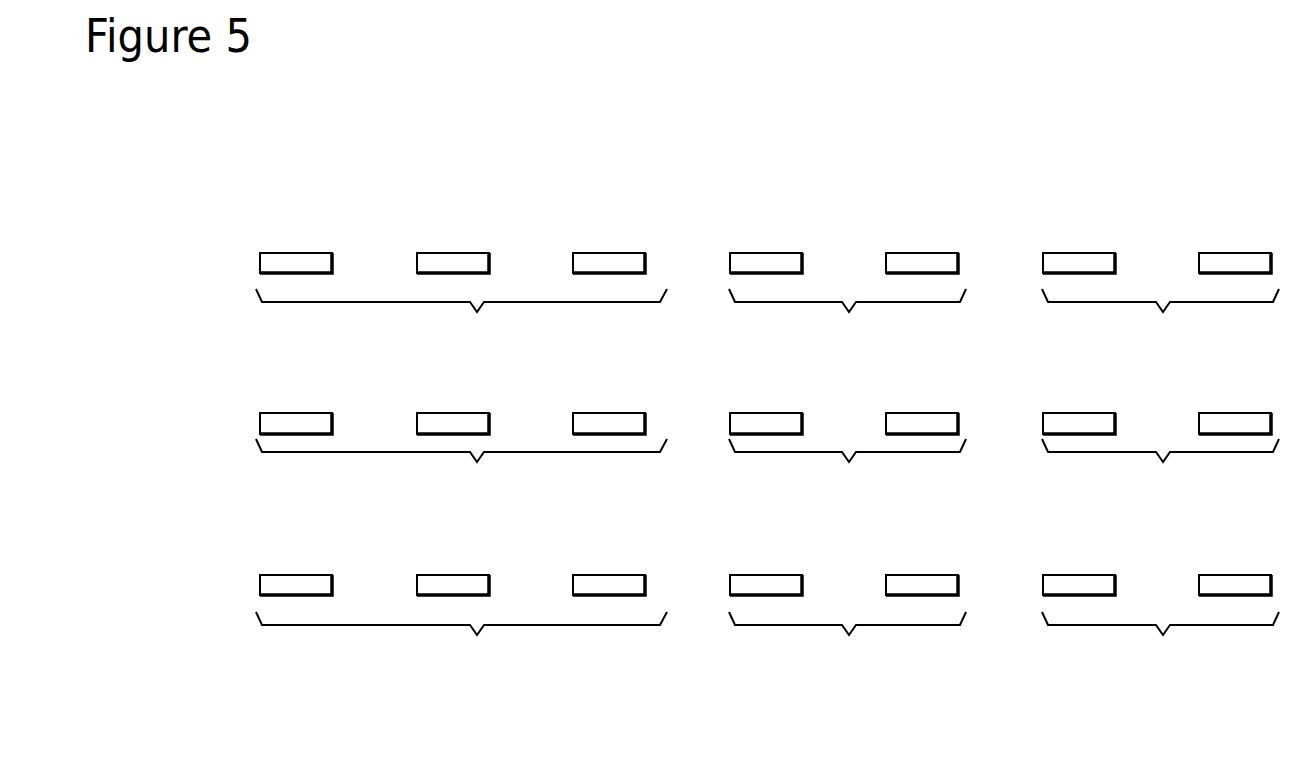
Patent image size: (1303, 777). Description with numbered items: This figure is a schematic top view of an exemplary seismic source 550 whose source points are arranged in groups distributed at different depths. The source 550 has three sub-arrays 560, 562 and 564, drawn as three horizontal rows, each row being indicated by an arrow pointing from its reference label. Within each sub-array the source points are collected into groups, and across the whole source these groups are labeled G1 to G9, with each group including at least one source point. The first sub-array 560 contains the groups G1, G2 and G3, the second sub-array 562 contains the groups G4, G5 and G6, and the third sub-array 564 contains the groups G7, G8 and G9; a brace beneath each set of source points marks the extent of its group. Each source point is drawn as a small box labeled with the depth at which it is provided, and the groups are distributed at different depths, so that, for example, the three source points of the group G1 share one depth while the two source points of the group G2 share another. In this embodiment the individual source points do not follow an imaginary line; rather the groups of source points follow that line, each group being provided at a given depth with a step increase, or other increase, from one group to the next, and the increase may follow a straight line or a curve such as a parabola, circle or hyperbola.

The source 550 is at (768, 99).
The first sub-array 560 is at (172, 264).
The sub-array 562 is at (172, 428).
The sub-array 564 is at (172, 587).
The group of source points G1 is at (461, 285).
The group of source points G2 is at (847, 285).
The group of source points G3 is at (1160, 285).
The group of source points G4 is at (461, 443).
The group of source points G5 is at (847, 443).
The group of source points G6 is at (1160, 443).
The group of source points G7 is at (461, 609).
The group of source points G8 is at (847, 609).
The group of source points G9 is at (1160, 609).